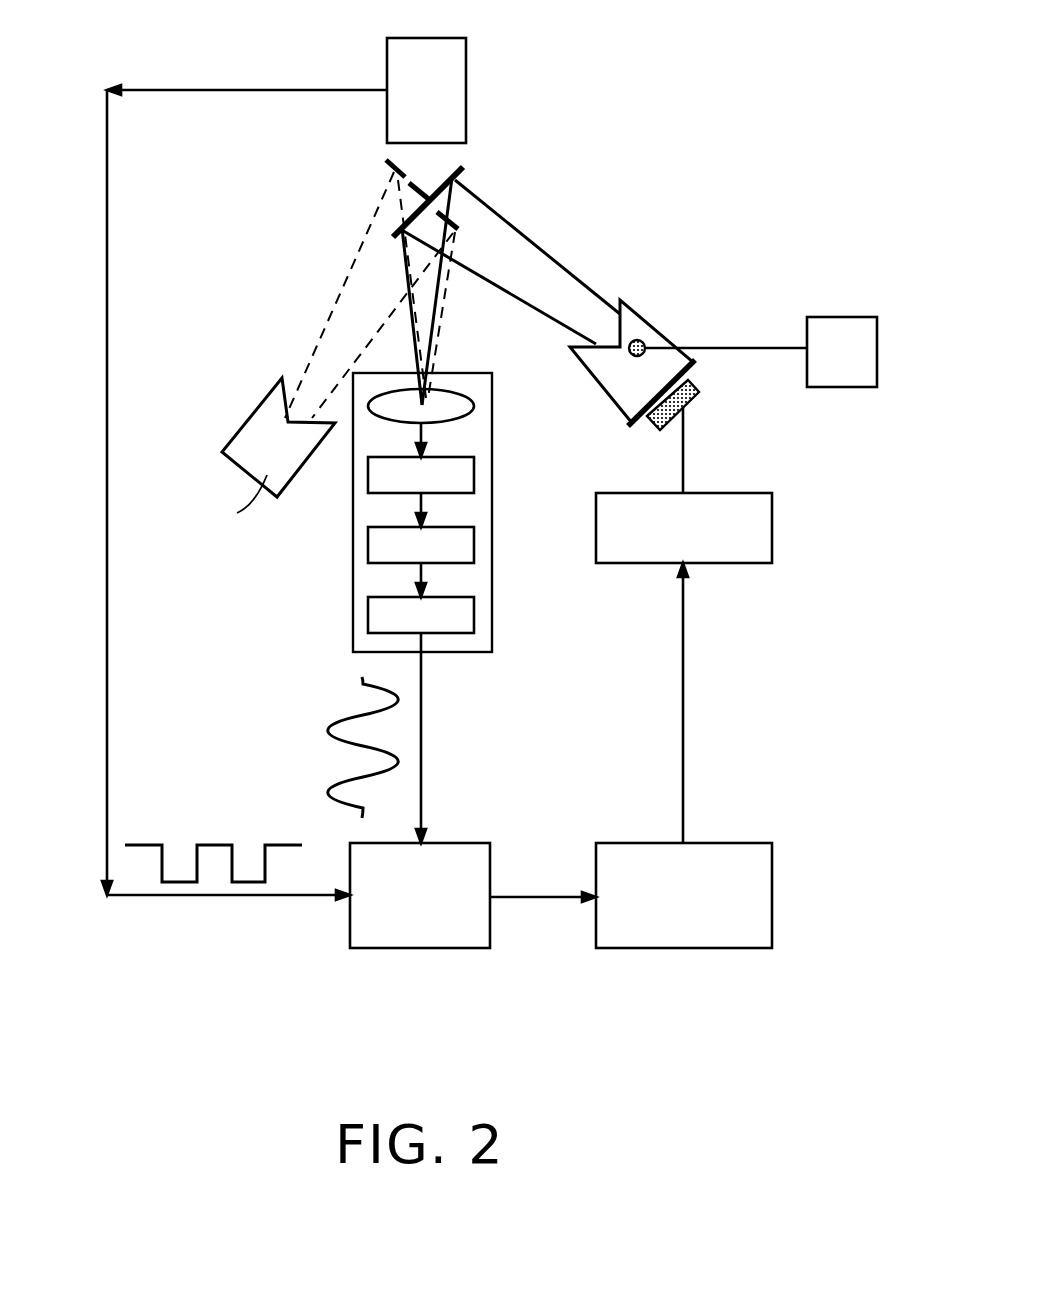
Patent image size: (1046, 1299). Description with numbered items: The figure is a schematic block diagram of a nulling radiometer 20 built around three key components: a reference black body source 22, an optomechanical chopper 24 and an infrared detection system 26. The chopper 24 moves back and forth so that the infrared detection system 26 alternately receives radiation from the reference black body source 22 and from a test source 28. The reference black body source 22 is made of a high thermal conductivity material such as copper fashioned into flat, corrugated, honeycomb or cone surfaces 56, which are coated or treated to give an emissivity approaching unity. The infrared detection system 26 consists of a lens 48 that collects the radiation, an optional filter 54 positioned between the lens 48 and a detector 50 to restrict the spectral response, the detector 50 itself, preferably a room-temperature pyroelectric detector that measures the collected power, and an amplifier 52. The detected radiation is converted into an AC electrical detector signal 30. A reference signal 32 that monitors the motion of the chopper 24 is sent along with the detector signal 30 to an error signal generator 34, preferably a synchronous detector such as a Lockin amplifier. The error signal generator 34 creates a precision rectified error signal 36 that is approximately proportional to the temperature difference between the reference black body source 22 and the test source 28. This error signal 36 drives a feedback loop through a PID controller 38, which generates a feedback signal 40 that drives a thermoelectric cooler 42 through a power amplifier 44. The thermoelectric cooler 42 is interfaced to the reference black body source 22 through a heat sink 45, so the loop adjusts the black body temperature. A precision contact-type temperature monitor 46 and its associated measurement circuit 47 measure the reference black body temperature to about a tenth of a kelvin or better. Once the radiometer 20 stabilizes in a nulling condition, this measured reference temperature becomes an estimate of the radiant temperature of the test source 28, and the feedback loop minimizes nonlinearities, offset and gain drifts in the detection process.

The nulling radiometer 20 is at (781, 175).
The reference black body source 22 is at (645, 306).
The optomechanical chopper 24 is at (493, 233).
The infrared detection system 26 is at (352, 622).
The test source 28 is at (293, 467).
The AC electrical detector signal 30 is at (480, 787).
The reference signal 32 is at (202, 953).
The error signal generator 34 is at (452, 997).
The error signal 36 is at (552, 957).
The PID controller 38 is at (807, 813).
The feedback signal 40 is at (737, 688).
The thermoelectric cooler 42 is at (760, 397).
The power amplifier 44 is at (833, 528).
The heat sink 45 is at (728, 370).
The temperature monitor 46 is at (705, 302).
The measurement circuit 47 is at (840, 280).
The lens 48 is at (533, 415).
The detector 50 is at (522, 532).
The amplifier 52 is at (522, 607).
The filter 54 is at (527, 472).
The surfaces 56 is at (618, 296).